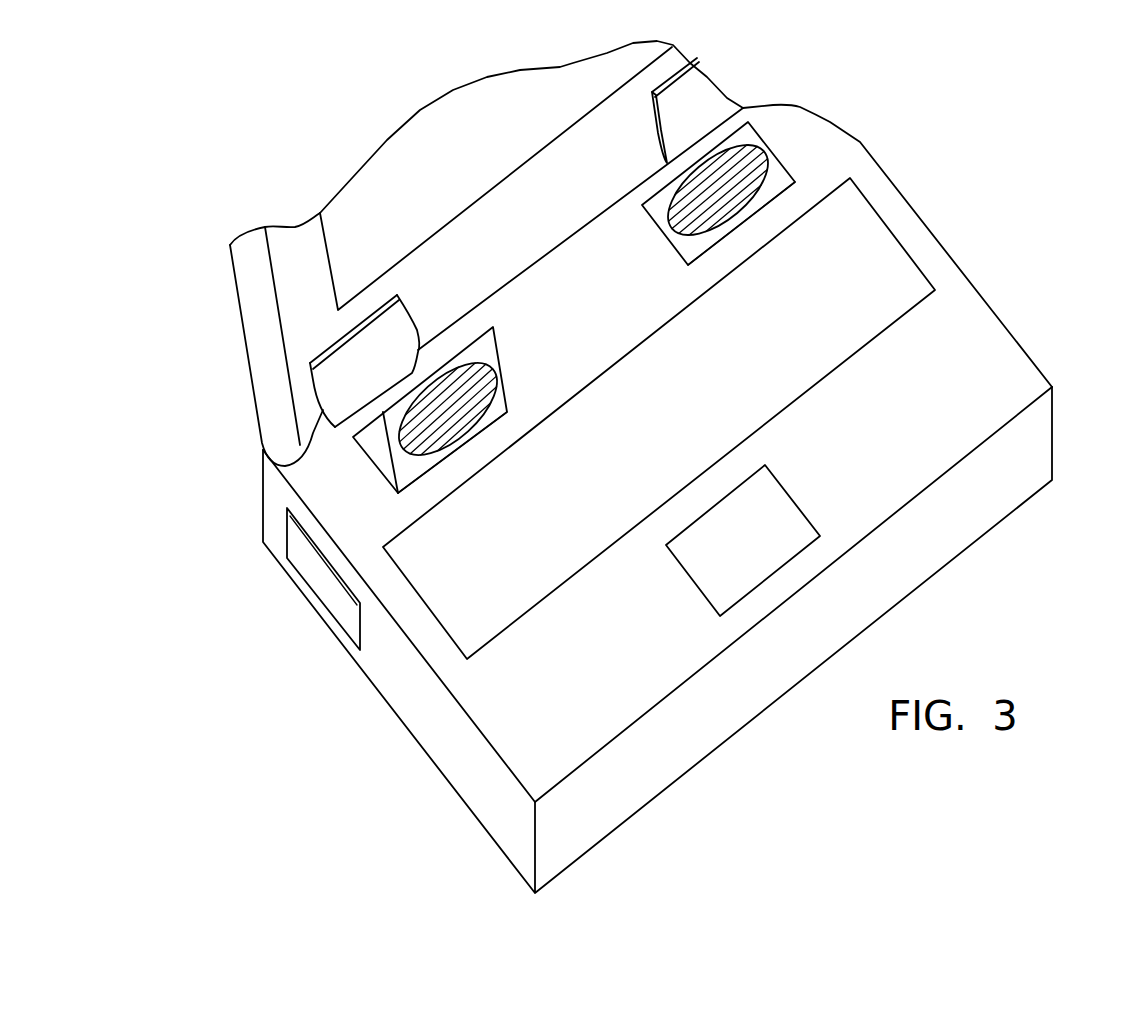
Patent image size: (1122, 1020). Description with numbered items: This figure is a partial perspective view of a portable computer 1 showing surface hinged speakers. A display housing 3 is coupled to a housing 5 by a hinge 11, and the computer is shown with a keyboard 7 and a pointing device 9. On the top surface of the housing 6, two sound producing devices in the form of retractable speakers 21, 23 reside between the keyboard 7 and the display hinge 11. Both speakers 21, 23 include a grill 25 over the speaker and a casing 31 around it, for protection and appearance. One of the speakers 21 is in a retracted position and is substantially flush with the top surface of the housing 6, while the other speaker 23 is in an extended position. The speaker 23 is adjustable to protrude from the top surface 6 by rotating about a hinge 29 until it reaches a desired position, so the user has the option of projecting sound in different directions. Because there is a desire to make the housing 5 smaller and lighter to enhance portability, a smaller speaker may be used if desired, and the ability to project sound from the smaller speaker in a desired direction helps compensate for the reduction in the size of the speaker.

The portable computer 1 is at (990, 204).
The display housing 3 is at (257, 312).
The housing 5 is at (457, 768).
The top surface of the housing 6 is at (360, 528).
The keyboard 7 is at (457, 650).
The pointing device 9 is at (788, 516).
The hinge 11 is at (412, 318).
The retractable speaker 21 is at (757, 140).
The retractable speaker 23 is at (500, 358).
The grill 25 is at (677, 215).
The hinge 29 is at (688, 265).
The casing 31 is at (378, 447).